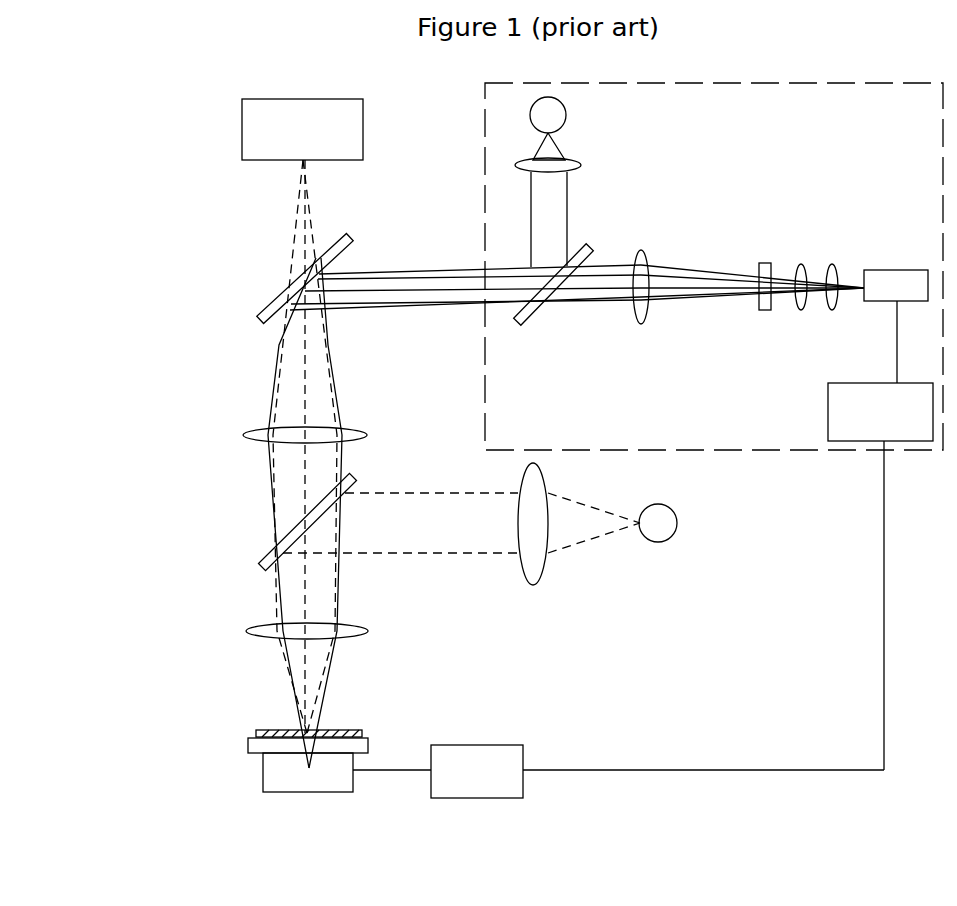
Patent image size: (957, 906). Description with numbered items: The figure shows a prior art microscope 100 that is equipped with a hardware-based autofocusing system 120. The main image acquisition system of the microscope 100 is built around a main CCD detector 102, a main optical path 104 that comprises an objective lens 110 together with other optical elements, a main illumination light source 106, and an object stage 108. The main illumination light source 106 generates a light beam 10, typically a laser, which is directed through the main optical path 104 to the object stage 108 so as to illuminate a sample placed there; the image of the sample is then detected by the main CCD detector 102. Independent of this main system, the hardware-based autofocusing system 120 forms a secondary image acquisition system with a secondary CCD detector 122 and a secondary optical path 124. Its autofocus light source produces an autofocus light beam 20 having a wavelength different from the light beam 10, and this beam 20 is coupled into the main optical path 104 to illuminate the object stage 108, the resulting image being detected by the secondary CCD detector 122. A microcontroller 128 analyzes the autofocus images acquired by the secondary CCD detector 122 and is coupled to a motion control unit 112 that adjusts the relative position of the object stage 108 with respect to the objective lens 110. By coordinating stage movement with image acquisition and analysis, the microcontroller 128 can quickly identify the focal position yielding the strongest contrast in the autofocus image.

The microscope 100 is at (681, 690).
The main charge coupled device (CCD) detector 102 is at (242, 130).
The main optical path 104 is at (228, 228).
The main illumination light source 106 is at (566, 112).
The object stage 108 is at (248, 750).
The objective lens 110 is at (368, 631).
The motion control unit 112 is at (504, 745).
The light beam 10 is at (428, 553).
The autofocus light beam 20 is at (567, 205).
The hardware-based autofocusing system 120 is at (889, 109).
The secondary CCD detector 122 is at (890, 270).
The secondary optical path 124 is at (635, 179).
The microcontroller 128 is at (828, 412).